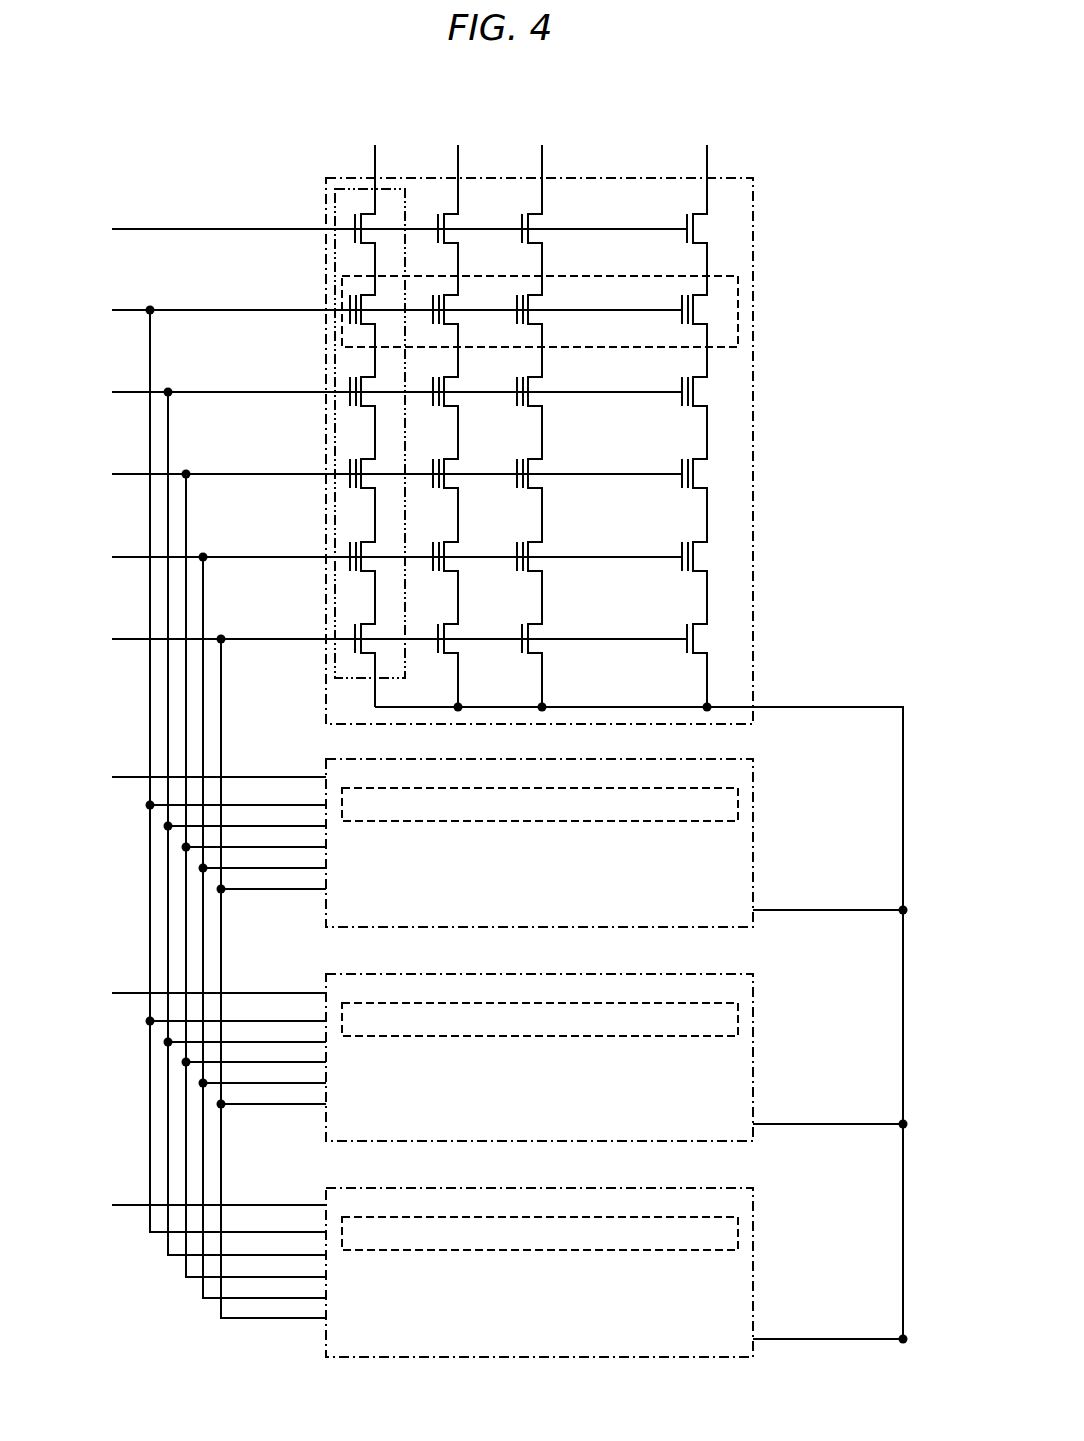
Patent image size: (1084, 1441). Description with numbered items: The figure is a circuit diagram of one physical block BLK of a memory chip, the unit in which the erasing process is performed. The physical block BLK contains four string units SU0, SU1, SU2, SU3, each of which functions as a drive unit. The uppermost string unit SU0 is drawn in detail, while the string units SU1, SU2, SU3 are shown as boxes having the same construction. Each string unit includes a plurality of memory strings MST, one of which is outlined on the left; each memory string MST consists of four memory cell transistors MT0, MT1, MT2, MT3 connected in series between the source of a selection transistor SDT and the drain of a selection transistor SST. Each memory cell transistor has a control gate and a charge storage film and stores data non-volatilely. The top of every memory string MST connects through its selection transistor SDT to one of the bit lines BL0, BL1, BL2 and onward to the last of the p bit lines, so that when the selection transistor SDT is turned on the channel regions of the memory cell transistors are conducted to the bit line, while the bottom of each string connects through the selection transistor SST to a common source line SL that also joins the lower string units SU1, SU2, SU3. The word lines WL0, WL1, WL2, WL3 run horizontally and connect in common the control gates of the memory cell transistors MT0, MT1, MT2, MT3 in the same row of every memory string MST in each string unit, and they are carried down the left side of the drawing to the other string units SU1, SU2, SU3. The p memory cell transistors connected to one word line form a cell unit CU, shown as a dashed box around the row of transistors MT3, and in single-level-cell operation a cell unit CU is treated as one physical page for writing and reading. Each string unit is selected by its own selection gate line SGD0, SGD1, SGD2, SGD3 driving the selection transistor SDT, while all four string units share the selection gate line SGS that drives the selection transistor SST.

The physical block BLK is at (160, 143).
The memory string MST is at (345, 189).
The selection transistor SDT is at (344, 216).
The selection transistor SST is at (344, 628).
The memory cell transistor MT0 is at (344, 548).
The memory cell transistor MT1 is at (344, 465).
The memory cell transistor MT2 is at (344, 383).
The memory cell transistor MT3 is at (344, 301).
The bit line BL0 is at (374, 410).
The bit line BL1 is at (457, 410).
The bit line BL2 is at (541, 410).
The selection gate line SGD0 is at (366, 229).
The selection gate line SGD1 is at (185, 777).
The selection gate line SGD2 is at (185, 993).
The selection gate line SGD3 is at (185, 1205).
The word line WL0 is at (371, 921).
The word line WL1 is at (371, 869).
The word line WL2 is at (371, 817).
The word line WL3 is at (371, 764).
The selection gate line SGS is at (375, 972).
The cell unit CU is at (738, 312).
The string unit SU0 is at (753, 398).
The string unit SU1 is at (753, 855).
The string unit SU2 is at (753, 1070).
The string unit SU3 is at (753, 1285).
The source line SL is at (903, 1339).